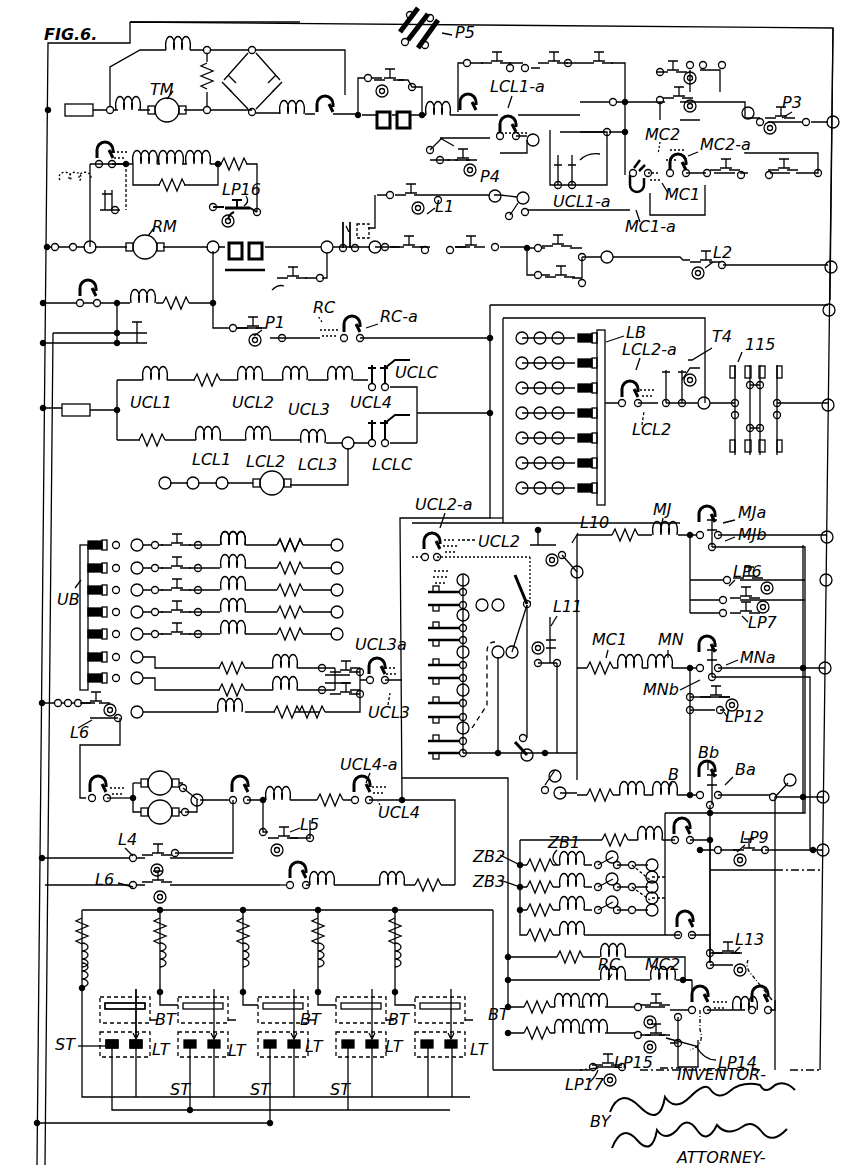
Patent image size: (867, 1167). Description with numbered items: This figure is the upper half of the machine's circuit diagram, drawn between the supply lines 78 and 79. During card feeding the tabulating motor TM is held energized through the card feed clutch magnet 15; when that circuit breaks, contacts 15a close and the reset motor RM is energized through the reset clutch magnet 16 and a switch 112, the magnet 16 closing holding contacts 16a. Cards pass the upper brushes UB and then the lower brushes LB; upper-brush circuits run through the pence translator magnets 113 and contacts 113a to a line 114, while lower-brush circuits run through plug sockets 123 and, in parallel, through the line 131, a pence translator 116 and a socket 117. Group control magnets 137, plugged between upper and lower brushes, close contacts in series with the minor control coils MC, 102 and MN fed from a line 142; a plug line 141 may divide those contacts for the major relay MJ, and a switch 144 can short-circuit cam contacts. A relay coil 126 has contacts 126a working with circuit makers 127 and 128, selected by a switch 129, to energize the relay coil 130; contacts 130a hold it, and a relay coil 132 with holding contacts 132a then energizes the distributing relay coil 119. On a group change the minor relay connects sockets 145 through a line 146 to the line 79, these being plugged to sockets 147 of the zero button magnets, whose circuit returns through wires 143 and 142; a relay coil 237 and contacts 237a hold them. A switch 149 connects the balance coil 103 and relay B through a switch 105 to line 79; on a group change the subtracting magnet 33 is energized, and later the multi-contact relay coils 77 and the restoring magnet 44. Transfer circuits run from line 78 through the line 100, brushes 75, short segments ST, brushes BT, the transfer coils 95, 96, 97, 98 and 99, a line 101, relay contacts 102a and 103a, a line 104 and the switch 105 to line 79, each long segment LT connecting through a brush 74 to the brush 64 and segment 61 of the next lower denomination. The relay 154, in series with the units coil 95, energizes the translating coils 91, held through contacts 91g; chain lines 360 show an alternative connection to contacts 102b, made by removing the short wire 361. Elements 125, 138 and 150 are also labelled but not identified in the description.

The supply line 78 is at (255, 20).
The supply line 79 is at (796, 27).
The card feed clutch magnet 15 is at (372, 122).
The card feed clutch magnet contacts 15a is at (346, 228).
The reset clutch magnet 16 is at (265, 260).
The reset clutch magnet contacts 16a is at (268, 280).
The switch 112 is at (516, 208).
The line 131 is at (489, 379).
The plug socket 117 is at (227, 487).
The pence translator 116 is at (268, 492).
The plug sockets 123 is at (547, 338).
The line 114 is at (504, 513).
The group control magnets 137 is at (247, 546).
The line 142 is at (310, 522).
The pence translator magnets 113 is at (280, 690).
The pence translator contacts 113a is at (338, 700).
The terminal 125 is at (140, 713).
The relay coil 126 is at (223, 722).
The relay contacts 126a is at (108, 776).
The circuit maker 127 is at (170, 776).
The circuit maker 128 is at (166, 817).
The switch 129 is at (193, 794).
The relay coil 130 is at (290, 787).
The relay contacts 130a is at (248, 772).
The relay coil 132 is at (338, 881).
The relay contacts 132a is at (306, 868).
The distributing relay coil 119 is at (423, 882).
The contacts 138 is at (477, 613).
The switch 144 is at (518, 589).
The plug line 141 is at (485, 670).
The switch 149 is at (555, 772).
The line 143 is at (485, 780).
The relay coil 102 is at (644, 660).
The relay contacts 102a is at (710, 1017).
The relay contacts 102b is at (710, 1045).
The relay coil 103 is at (630, 788).
The relay contacts 103a is at (763, 999).
The switch 105 is at (780, 788).
The sockets 147 is at (651, 844).
The conductor 150 is at (644, 857).
The sockets 145 is at (654, 887).
The relay coil 237 is at (586, 927).
The relay contacts 237a is at (694, 912).
The line 146 is at (730, 869).
The line 104 is at (772, 936).
The subtracting magnet 33 is at (618, 956).
The restoring magnet 44 is at (613, 1005).
The multi-contact relay coils 77 is at (596, 1042).
The chain lines 360 is at (700, 1062).
The short wire 361 is at (671, 1074).
The line 101 is at (493, 1052).
The units transfer coil 95 is at (90, 952).
The relay 154 is at (90, 972).
The ten-thousands transfer coil 99 is at (170, 962).
The thousands transfer coil 98 is at (254, 952).
The hundreds transfer coil 97 is at (330, 952).
The tens transfer coil 96 is at (405, 952).
The segment 61 is at (103, 1002).
The brush 64 is at (146, 992).
The brushes 75 is at (113, 1055).
The brush 74 is at (136, 1053).
The line 100 is at (270, 1123).
The coils 91 is at (76, 166).
The contacts 91g is at (126, 208).